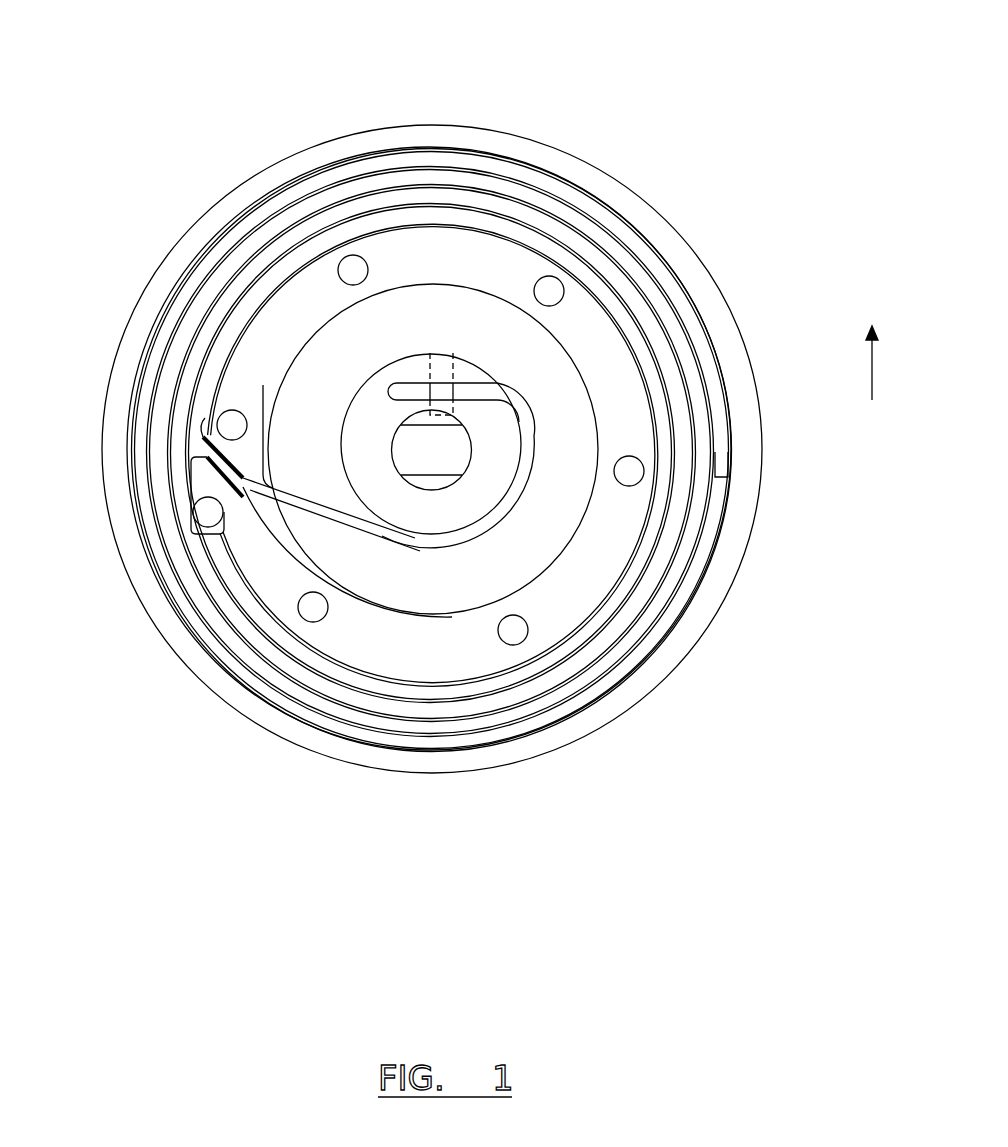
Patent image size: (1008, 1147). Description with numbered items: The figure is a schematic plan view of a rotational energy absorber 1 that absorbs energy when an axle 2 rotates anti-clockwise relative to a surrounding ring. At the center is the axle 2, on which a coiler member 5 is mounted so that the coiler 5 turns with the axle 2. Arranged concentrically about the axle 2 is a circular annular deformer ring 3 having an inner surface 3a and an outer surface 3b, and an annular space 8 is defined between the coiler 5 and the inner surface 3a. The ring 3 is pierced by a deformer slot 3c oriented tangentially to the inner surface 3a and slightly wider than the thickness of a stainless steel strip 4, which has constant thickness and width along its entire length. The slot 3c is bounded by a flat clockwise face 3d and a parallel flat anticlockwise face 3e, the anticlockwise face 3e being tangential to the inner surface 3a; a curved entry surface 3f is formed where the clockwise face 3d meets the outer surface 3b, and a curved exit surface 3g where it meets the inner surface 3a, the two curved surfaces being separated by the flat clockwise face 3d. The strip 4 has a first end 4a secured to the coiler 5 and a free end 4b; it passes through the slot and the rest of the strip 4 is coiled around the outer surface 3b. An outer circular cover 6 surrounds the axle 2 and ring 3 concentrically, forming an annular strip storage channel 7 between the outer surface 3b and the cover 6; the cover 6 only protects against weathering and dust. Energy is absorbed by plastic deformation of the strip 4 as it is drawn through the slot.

The rotational energy absorber 1 is at (310, 778).
The axle 2 is at (452, 443).
The deformer ring 3 is at (490, 480).
The inner surface 3a is at (398, 288).
The outer surface 3b is at (453, 222).
The deformer slot 3c is at (213, 446).
The clockwise face 3d is at (214, 447).
The anticlockwise face 3e is at (223, 490).
The curved entry surface 3f is at (217, 413).
The curved exit surface 3g is at (263, 480).
The stainless steel strip 4 is at (394, 162).
The first end 4a is at (473, 357).
The free end 4b is at (722, 463).
The coiler member 5 is at (577, 593).
The outer circular cover 6 is at (722, 312).
The annular strip storage channel 7 is at (705, 555).
The annular space 8 is at (580, 460).